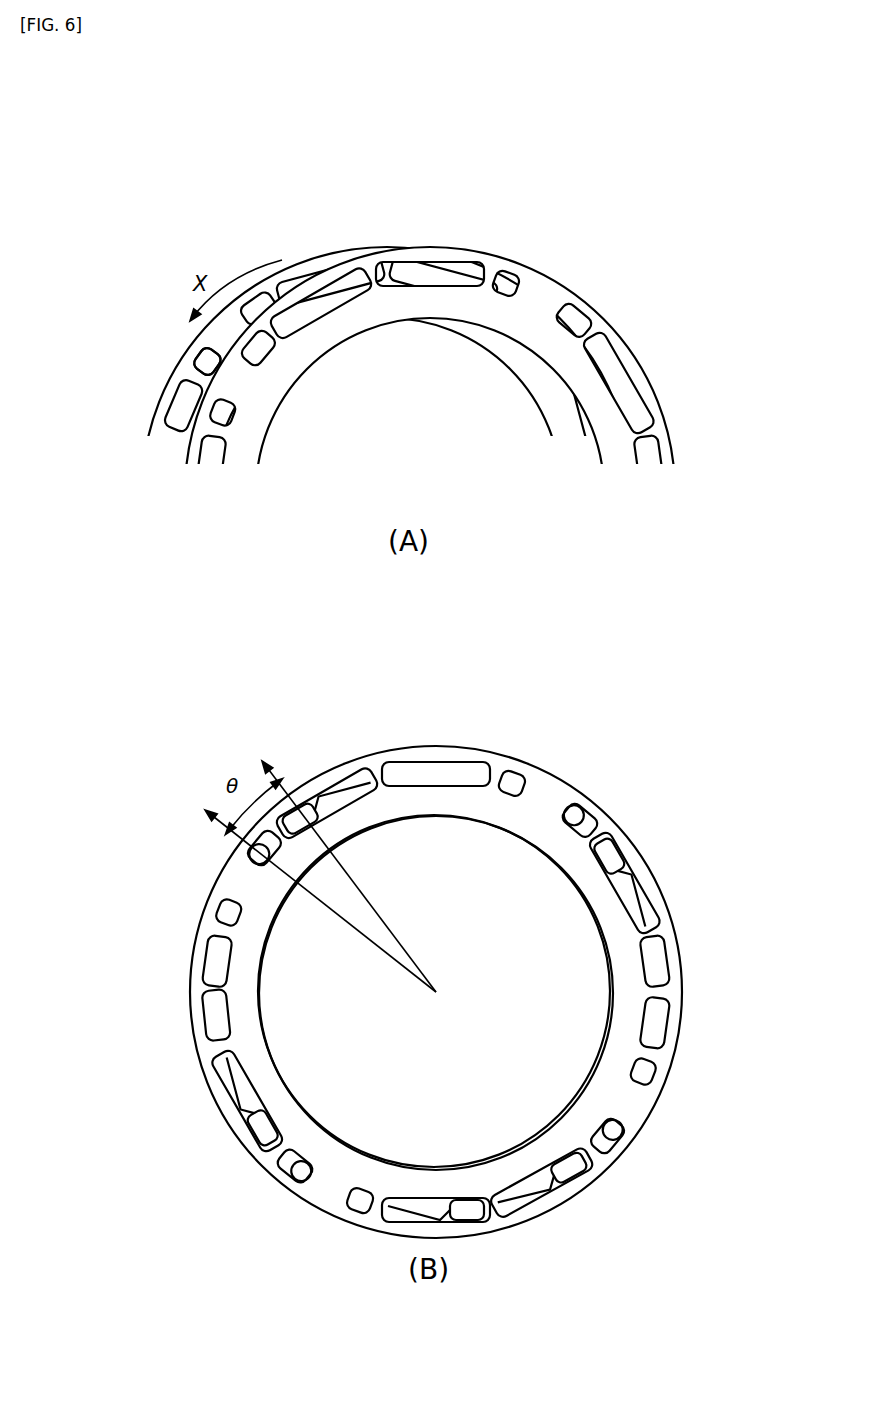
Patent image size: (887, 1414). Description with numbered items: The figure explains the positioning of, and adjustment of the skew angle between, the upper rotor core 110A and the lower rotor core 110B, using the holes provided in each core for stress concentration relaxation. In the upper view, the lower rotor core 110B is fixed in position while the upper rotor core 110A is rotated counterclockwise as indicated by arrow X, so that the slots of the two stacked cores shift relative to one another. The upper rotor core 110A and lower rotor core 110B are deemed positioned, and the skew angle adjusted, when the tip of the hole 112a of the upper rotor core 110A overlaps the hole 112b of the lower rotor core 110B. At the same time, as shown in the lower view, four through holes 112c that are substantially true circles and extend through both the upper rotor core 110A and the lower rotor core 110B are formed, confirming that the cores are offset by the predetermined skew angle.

The upper rotor core 110A is at (435, 741).
The lower rotor core 110B is at (375, 470).
The hole of the upper rotor core 112a is at (268, 358).
The hole of the lower rotor core 112b is at (196, 350).
The through holes 112c is at (249, 853).